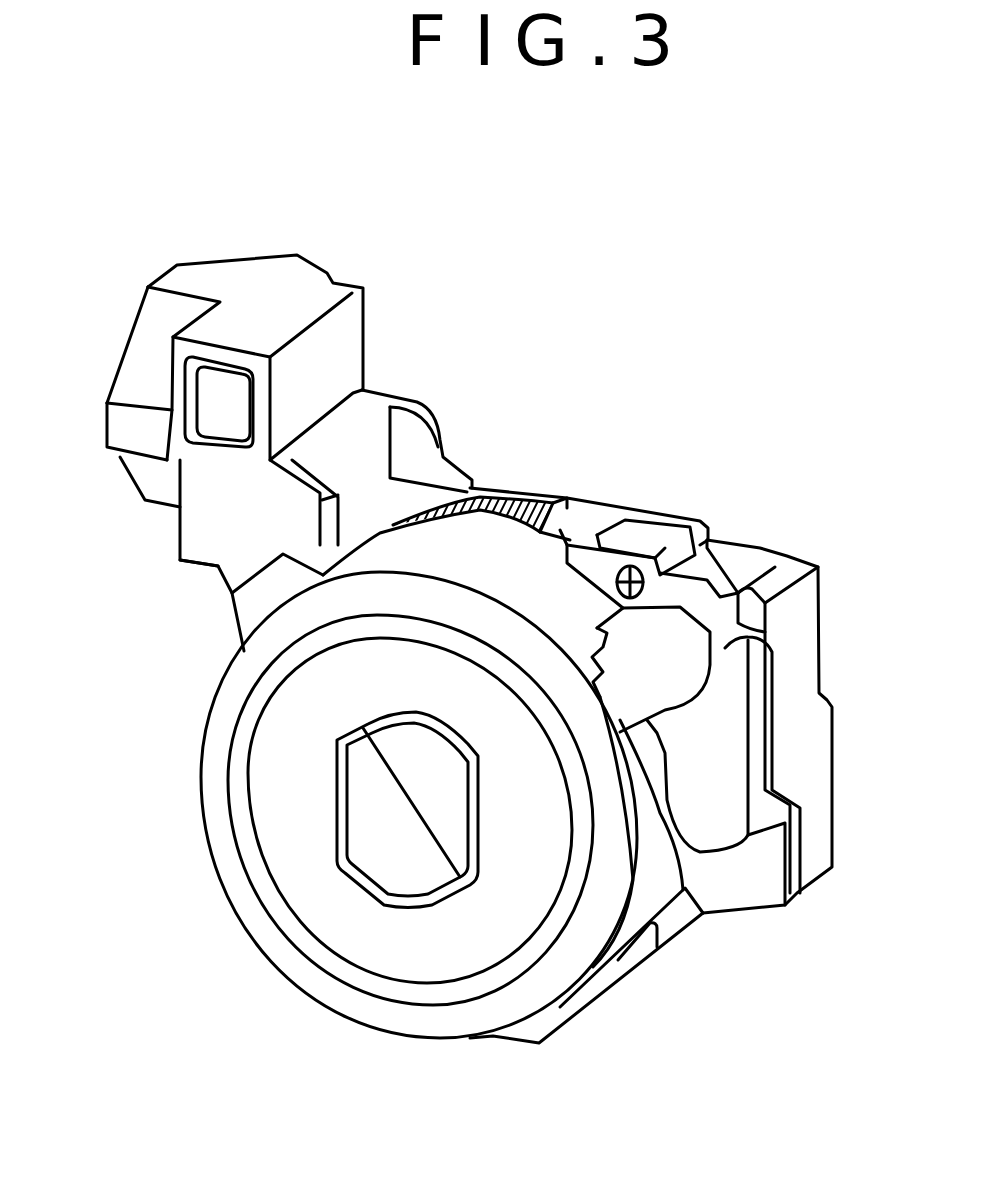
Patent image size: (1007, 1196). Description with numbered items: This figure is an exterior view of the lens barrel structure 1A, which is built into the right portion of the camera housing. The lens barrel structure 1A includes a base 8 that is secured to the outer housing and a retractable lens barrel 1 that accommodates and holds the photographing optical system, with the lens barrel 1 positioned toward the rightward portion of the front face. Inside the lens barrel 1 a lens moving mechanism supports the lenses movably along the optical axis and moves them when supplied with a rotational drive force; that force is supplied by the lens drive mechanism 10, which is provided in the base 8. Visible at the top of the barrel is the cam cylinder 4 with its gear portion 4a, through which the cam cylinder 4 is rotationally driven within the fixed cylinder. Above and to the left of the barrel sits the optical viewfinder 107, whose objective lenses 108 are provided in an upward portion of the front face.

The lens barrel structure 1A is at (630, 353).
The lens barrel 1 is at (180, 813).
The cam cylinder 4 is at (490, 510).
The gear portion 4a is at (472, 520).
The base 8 is at (597, 498).
The lens drive mechanism 10 is at (777, 670).
The optical viewfinder 107 is at (340, 273).
The objective lenses 108 is at (220, 402).